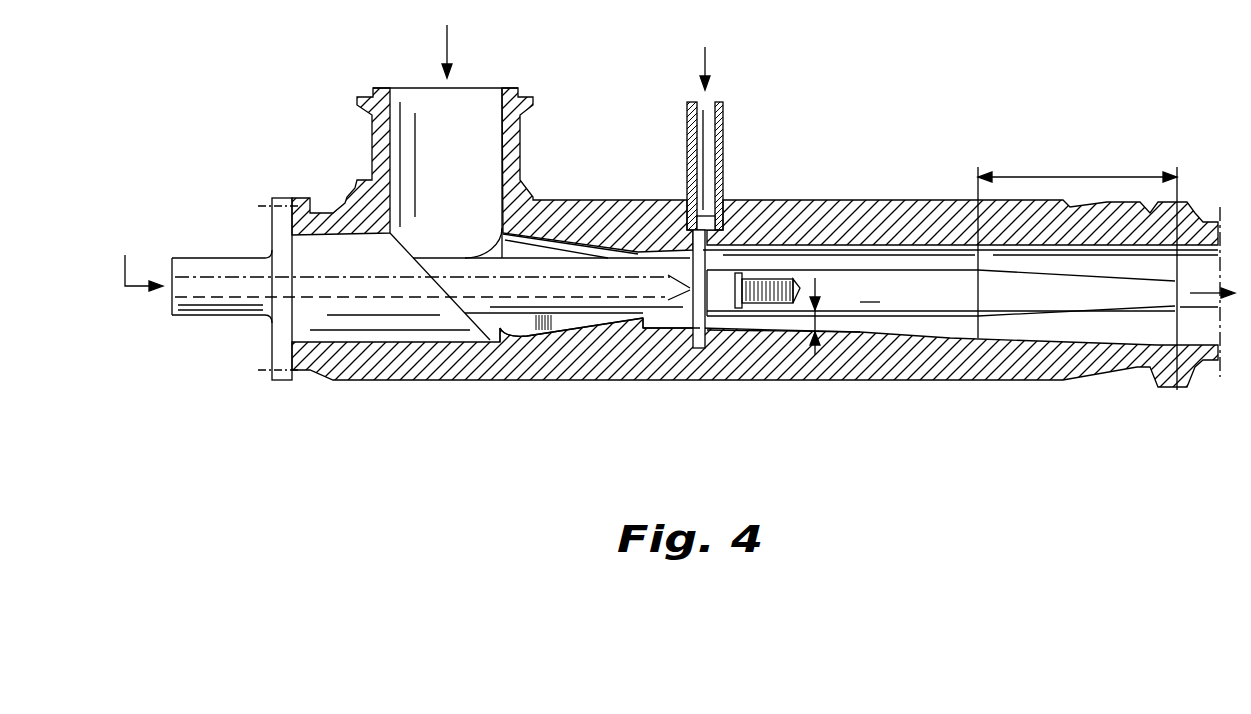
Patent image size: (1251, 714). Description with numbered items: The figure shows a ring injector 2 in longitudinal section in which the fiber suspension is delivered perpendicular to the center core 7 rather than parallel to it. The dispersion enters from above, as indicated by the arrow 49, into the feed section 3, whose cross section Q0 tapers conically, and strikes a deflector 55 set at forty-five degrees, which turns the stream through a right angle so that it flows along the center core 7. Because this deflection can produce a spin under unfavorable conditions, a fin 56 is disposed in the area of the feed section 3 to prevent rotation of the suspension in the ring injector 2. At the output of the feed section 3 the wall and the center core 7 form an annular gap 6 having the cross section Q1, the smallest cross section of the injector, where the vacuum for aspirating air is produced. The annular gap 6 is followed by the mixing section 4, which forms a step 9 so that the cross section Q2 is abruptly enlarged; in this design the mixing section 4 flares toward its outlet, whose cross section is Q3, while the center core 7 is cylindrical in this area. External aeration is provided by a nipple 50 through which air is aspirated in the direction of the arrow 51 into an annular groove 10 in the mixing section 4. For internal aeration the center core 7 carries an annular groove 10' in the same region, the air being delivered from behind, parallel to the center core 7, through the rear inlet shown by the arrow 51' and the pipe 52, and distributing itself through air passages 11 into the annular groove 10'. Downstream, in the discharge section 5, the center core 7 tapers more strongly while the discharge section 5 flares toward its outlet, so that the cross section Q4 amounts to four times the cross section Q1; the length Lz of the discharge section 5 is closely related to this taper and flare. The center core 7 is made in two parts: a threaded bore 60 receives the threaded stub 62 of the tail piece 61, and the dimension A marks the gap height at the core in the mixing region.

The ring injector 2 is at (869, 172).
The feed section 3 is at (530, 237).
The mixing section 4 is at (845, 320).
The discharge section 5 is at (1082, 325).
The annular gap 6 is at (645, 320).
The center core 7 is at (420, 356).
The step 9 is at (698, 320).
The annular groove 10 is at (733, 248).
The annular groove 10' is at (724, 350).
The air passages 11 is at (678, 277).
The arrow 49 is at (447, 45).
The nipple 50 is at (723, 130).
The arrow 51 is at (724, 64).
The inlet flow 51' is at (141, 260).
The inlet pipe 52 is at (208, 287).
The deflector 55 is at (413, 252).
The fin 56 is at (523, 322).
The threaded bore 60 is at (778, 285).
The tail piece 61 is at (922, 277).
The threaded stub 62 is at (800, 288).
The gap height A is at (811, 350).
The cross section of feed section Q0 is at (483, 132).
The cross section of annular gap Q1 is at (567, 369).
The cross section of mixing section Q2 is at (712, 320).
The cross section at mixing section outlet Q3 is at (980, 337).
The cross section of discharge section outlet Q4 is at (1163, 328).
The length of discharge section Lz is at (1065, 177).